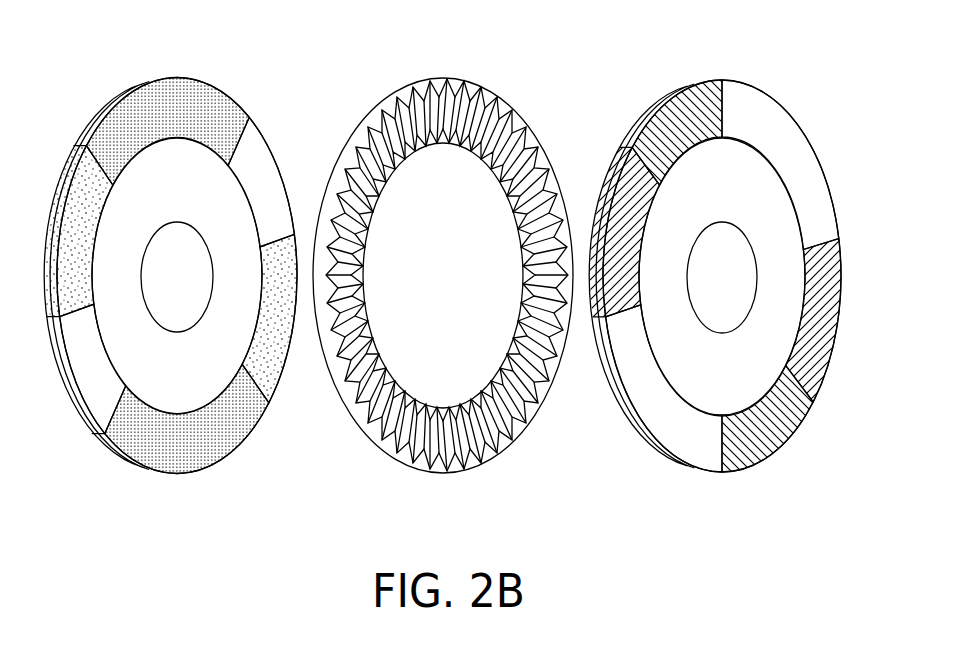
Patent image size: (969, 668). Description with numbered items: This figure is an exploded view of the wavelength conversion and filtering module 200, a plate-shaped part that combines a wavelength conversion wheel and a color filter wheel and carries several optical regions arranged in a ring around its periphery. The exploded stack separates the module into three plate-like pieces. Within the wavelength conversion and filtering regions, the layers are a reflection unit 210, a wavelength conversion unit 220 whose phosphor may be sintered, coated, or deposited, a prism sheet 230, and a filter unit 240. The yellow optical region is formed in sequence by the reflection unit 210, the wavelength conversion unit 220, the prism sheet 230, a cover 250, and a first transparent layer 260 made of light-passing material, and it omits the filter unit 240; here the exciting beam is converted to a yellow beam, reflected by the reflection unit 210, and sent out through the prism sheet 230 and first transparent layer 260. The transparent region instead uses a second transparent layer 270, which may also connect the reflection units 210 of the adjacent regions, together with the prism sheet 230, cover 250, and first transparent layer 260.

The wavelength conversion and filtering module 200 is at (448, 293).
The reflection unit 210 is at (89, 146).
The wavelength conversion unit 220 is at (87, 207).
The prism sheet 230 is at (392, 105).
The filter unit 240 is at (662, 138).
The cover 250 is at (623, 415).
The first transparent layer 260 is at (762, 117).
The second transparent layer 270 is at (95, 392).